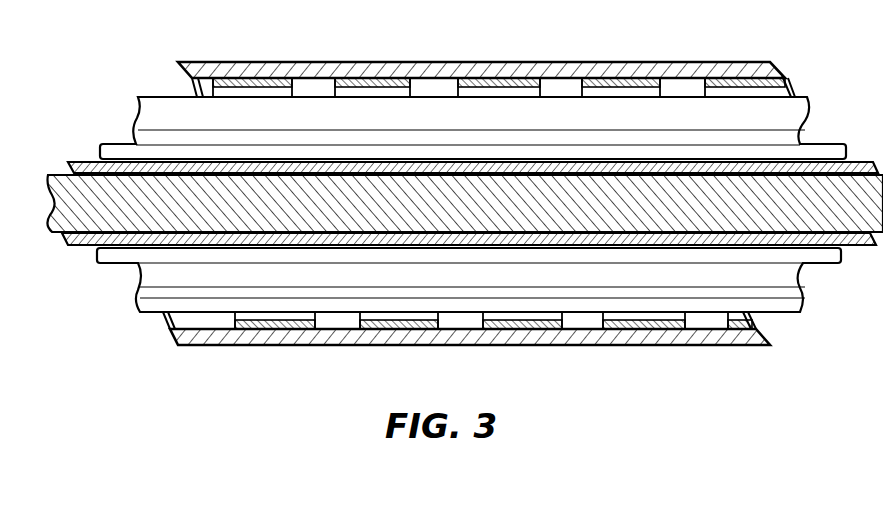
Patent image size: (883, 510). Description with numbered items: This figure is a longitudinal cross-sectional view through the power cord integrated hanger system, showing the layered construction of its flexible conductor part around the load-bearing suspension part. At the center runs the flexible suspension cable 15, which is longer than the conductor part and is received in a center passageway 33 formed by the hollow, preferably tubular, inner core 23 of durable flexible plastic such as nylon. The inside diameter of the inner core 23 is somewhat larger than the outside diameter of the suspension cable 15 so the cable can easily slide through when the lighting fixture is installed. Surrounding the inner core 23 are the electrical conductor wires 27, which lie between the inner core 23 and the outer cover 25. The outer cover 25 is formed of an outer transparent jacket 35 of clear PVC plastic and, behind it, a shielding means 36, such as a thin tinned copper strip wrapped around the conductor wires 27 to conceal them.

The suspension cable 15 is at (67, 175).
The inner core 23 is at (87, 162).
The outer cover 25 is at (793, 72).
The conductor wires 27 is at (157, 96).
The center passageway 33 is at (60, 236).
The outer transparent jacket 35 is at (250, 63).
The shielding means 36 is at (334, 90).